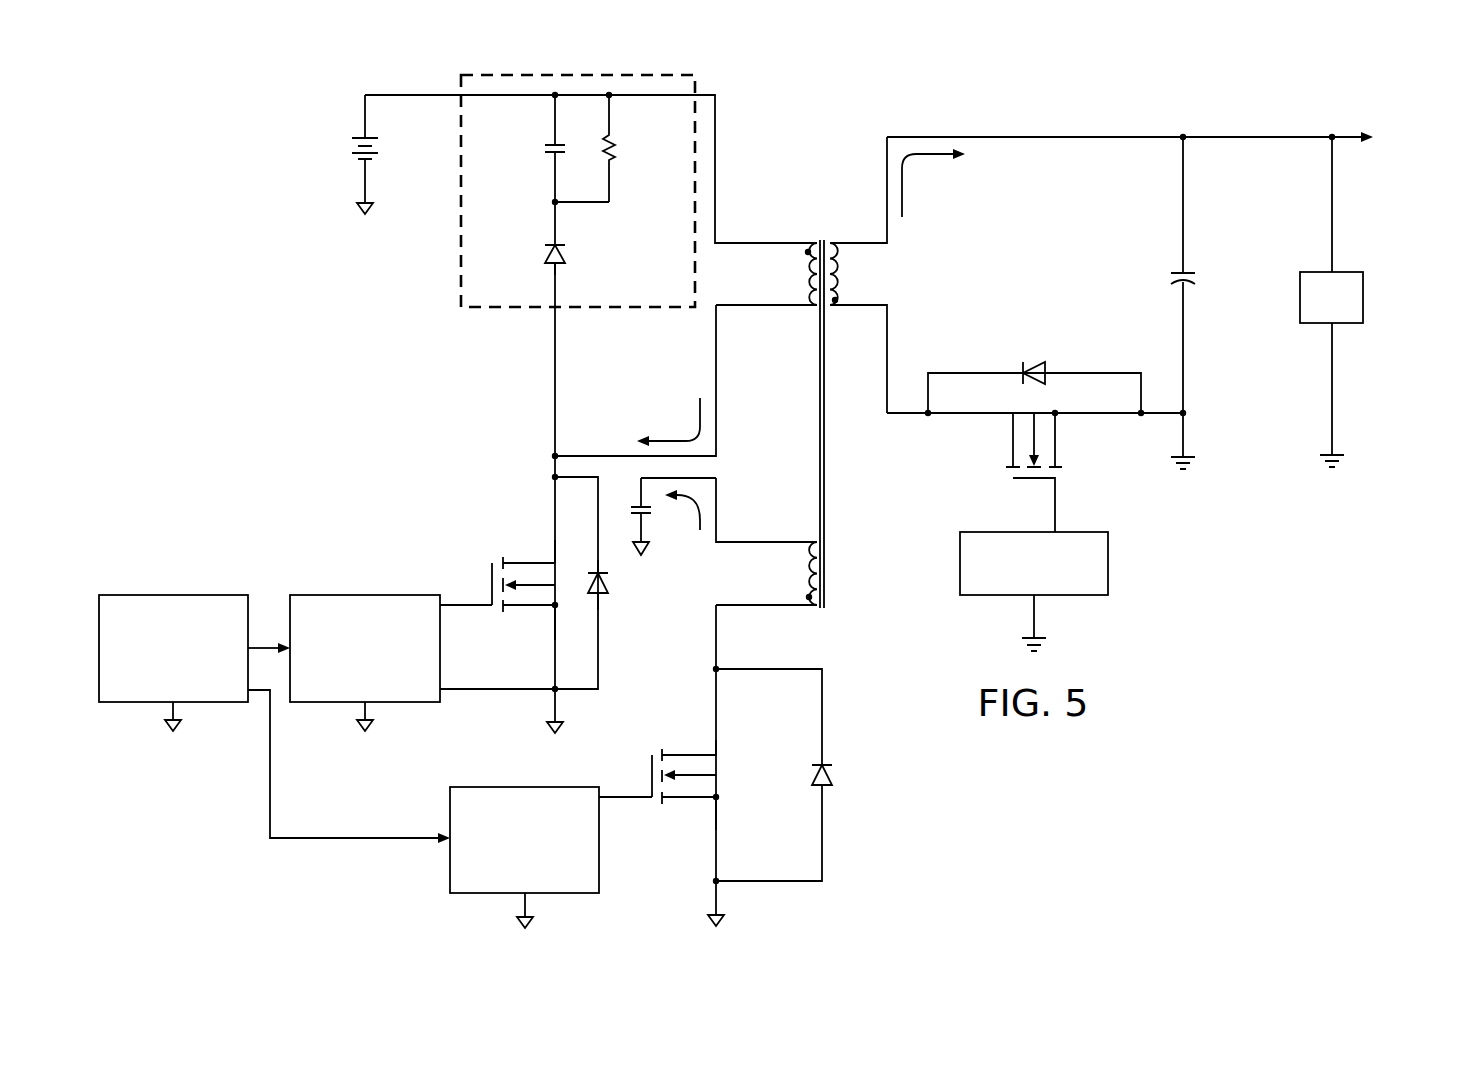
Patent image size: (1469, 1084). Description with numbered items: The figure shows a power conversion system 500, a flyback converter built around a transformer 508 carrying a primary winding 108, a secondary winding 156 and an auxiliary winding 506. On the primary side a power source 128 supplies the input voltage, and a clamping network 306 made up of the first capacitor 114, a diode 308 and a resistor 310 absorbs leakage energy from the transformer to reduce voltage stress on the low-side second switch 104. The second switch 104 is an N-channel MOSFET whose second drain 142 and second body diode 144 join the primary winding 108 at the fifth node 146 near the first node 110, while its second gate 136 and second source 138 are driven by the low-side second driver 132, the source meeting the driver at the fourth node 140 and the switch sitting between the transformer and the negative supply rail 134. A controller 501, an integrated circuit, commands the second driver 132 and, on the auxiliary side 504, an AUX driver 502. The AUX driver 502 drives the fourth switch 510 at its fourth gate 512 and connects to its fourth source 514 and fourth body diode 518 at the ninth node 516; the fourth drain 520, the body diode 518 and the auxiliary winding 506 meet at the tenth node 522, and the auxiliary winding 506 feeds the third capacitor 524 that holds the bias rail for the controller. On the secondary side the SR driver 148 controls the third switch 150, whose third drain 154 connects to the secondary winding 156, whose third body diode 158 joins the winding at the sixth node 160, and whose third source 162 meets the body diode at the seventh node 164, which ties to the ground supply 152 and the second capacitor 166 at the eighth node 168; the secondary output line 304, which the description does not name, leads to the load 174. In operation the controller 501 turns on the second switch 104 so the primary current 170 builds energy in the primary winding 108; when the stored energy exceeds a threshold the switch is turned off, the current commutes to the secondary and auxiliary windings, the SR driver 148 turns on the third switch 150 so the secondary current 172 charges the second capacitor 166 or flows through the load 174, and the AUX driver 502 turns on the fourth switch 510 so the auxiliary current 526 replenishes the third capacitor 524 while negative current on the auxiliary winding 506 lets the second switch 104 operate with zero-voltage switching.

The power source 128 is at (352, 146).
The first capacitor 114 is at (547, 145).
The resistor 310 is at (612, 147).
The clamping network 306 is at (461, 228).
The diode 308 is at (547, 252).
The first node 110 is at (558, 455).
The fifth node 146 is at (553, 475).
The primary current 170 is at (699, 412).
The second switch 104 is at (491, 577).
The second drain 142 is at (532, 563).
The second gate 136 is at (490, 597).
The second source 138 is at (530, 607).
The fourth node 140 is at (548, 693).
The second body diode 144 is at (605, 583).
The third capacitor 524 is at (653, 508).
The auxiliary current 526 is at (700, 517).
The transformer 508 is at (823, 236).
The primary winding 108 is at (813, 312).
The secondary winding 156 is at (837, 312).
The auxiliary winding 506 is at (812, 607).
The tenth node 522 is at (714, 668).
The fourth body diode 518 is at (833, 776).
The fourth switch 510 is at (650, 767).
The fourth drain 520 is at (688, 753).
The fourth gate 512 is at (650, 786).
The fourth source 514 is at (690, 800).
The ninth node 516 is at (710, 885).
The controller 501 is at (143, 705).
The negative supply rail 134 is at (178, 733).
The second driver 132 is at (333, 705).
The auxiliary side 504 is at (358, 842).
The AUX driver 502 is at (492, 895).
The output node 304 is at (1035, 137).
The power conversion system 500 is at (1152, 114).
The secondary current 172 is at (902, 186).
The second capacitor 166 is at (1195, 280).
The eighth node 168 is at (1187, 410).
The ground supply 152 is at (1195, 462).
The load 174 is at (1363, 297).
The third body diode 158 is at (1033, 362).
The sixth node 160 is at (920, 408).
The seventh node 164 is at (1150, 408).
The third drain 154 is at (1012, 440).
The third source 162 is at (1057, 440).
The third switch 150 is at (1027, 479).
The SR driver 148 is at (1108, 572).